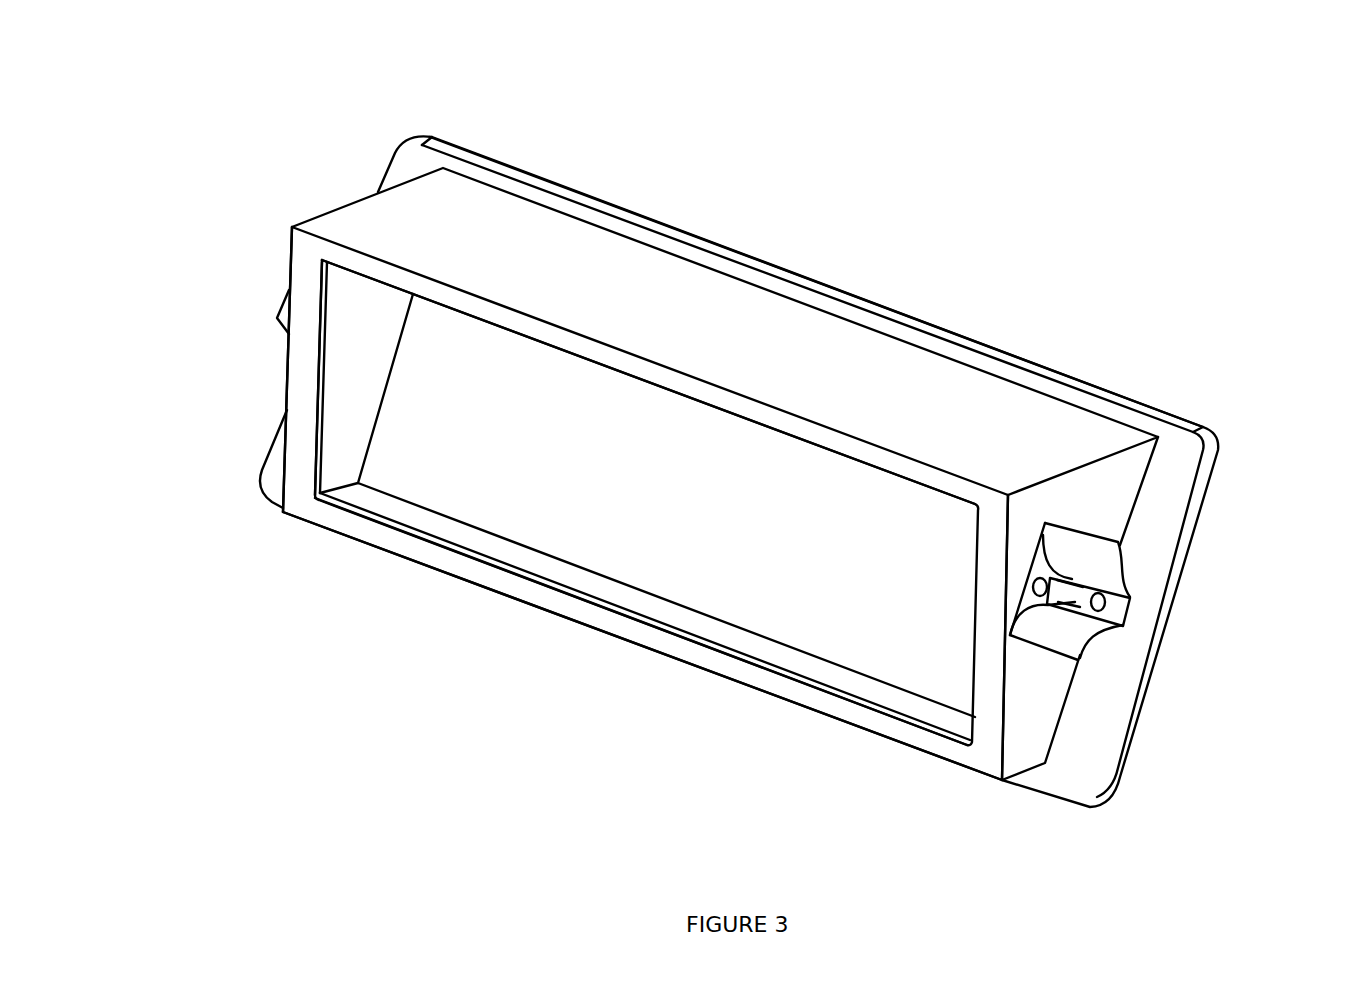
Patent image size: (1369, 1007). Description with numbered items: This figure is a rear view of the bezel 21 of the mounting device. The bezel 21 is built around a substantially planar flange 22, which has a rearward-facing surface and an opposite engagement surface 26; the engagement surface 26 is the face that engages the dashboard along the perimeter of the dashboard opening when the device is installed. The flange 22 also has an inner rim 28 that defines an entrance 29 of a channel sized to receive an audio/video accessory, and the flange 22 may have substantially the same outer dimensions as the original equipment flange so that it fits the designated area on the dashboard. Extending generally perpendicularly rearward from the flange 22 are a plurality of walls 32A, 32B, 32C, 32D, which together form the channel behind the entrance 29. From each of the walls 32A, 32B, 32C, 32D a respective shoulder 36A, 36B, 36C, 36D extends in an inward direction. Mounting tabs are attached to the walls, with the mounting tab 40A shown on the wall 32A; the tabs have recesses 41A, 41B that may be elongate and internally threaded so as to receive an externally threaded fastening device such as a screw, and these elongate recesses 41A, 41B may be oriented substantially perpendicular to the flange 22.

The bezel 21 is at (881, 175).
The flange 22 is at (943, 327).
The engagement surface 26 is at (1177, 485).
The inner rim 28 is at (463, 525).
The entrance 29 is at (888, 658).
The wall 32A is at (1045, 670).
The wall 32B is at (673, 613).
The wall 32C is at (333, 417).
The wall 32D is at (462, 227).
The shoulder 36A is at (987, 727).
The shoulder 36B is at (412, 548).
The shoulder 36C is at (298, 363).
The shoulder 36D is at (518, 320).
The mounting tab 40A is at (1120, 595).
The recess 41A is at (1033, 588).
The recess 41B is at (285, 303).